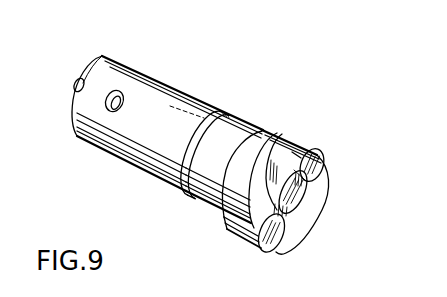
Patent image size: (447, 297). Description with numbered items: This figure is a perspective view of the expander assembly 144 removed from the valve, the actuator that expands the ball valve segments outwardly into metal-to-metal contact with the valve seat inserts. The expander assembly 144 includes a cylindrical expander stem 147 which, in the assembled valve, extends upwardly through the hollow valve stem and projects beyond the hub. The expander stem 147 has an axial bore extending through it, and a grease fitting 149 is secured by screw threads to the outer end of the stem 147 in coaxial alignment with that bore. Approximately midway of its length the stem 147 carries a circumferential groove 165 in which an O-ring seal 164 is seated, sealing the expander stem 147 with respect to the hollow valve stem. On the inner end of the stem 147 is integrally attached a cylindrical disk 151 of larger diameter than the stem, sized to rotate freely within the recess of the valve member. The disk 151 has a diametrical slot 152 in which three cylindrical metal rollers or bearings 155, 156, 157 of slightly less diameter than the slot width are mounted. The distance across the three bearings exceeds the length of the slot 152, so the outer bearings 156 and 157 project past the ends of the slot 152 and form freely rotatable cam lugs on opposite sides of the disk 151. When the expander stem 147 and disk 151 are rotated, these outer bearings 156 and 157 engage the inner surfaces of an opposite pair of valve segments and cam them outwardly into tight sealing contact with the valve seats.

The expander assembly 144 is at (247, 64).
The cylindrical expander stem 147 is at (160, 82).
The grease fitting 149 is at (80, 82).
The cylindrical disk 151 is at (318, 201).
The diametrical slot 152 is at (306, 187).
The cylindrical bearing 155 is at (300, 206).
The cylindrical bearing 156 is at (277, 240).
The cylindrical bearing 157 is at (318, 158).
The O-ring seal 164 is at (230, 115).
The circumferential groove 165 is at (204, 188).